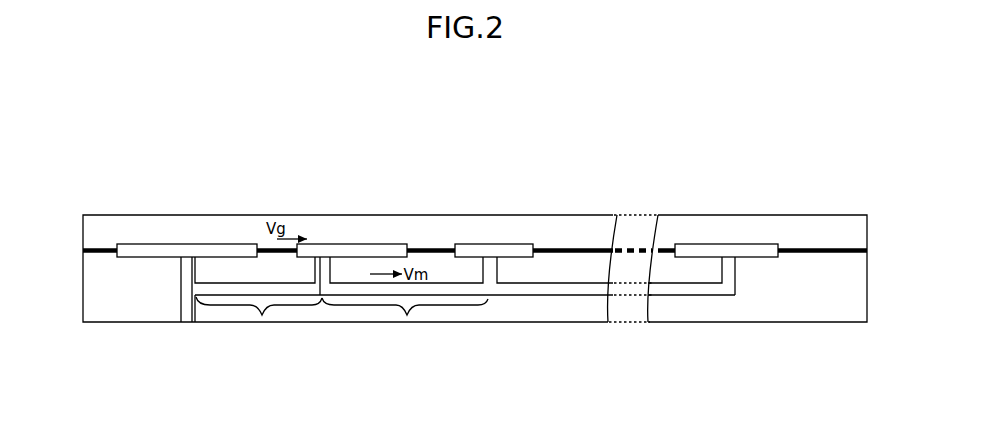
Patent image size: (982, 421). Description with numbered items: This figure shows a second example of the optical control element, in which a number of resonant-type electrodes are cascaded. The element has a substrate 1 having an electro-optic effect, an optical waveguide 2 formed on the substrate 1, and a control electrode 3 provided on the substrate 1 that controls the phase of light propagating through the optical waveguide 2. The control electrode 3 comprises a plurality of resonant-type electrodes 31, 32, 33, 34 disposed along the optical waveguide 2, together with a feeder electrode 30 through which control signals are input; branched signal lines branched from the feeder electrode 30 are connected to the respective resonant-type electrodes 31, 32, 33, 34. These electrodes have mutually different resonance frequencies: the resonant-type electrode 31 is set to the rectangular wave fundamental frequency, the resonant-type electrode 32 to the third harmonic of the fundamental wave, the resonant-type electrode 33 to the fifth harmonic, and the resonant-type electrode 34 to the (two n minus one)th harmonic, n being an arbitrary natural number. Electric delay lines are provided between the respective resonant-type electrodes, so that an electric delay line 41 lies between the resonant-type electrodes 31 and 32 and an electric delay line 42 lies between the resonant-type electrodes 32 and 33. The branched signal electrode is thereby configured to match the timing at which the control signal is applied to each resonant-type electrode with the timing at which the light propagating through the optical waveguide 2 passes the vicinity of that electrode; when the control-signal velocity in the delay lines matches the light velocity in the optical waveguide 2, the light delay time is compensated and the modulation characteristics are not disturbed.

The substrate 1 is at (105, 310).
The optical waveguide 2 is at (113, 246).
The control electrode 3 is at (177, 295).
The feeder electrode 30 is at (189, 322).
The resonant-type electrode 31 is at (188, 244).
The resonant-type electrode 32 is at (323, 244).
The resonant-type electrode 33 is at (488, 244).
The resonant-type electrode 34 is at (727, 244).
The electric delay line 41 is at (262, 315).
The electric delay line 42 is at (407, 315).